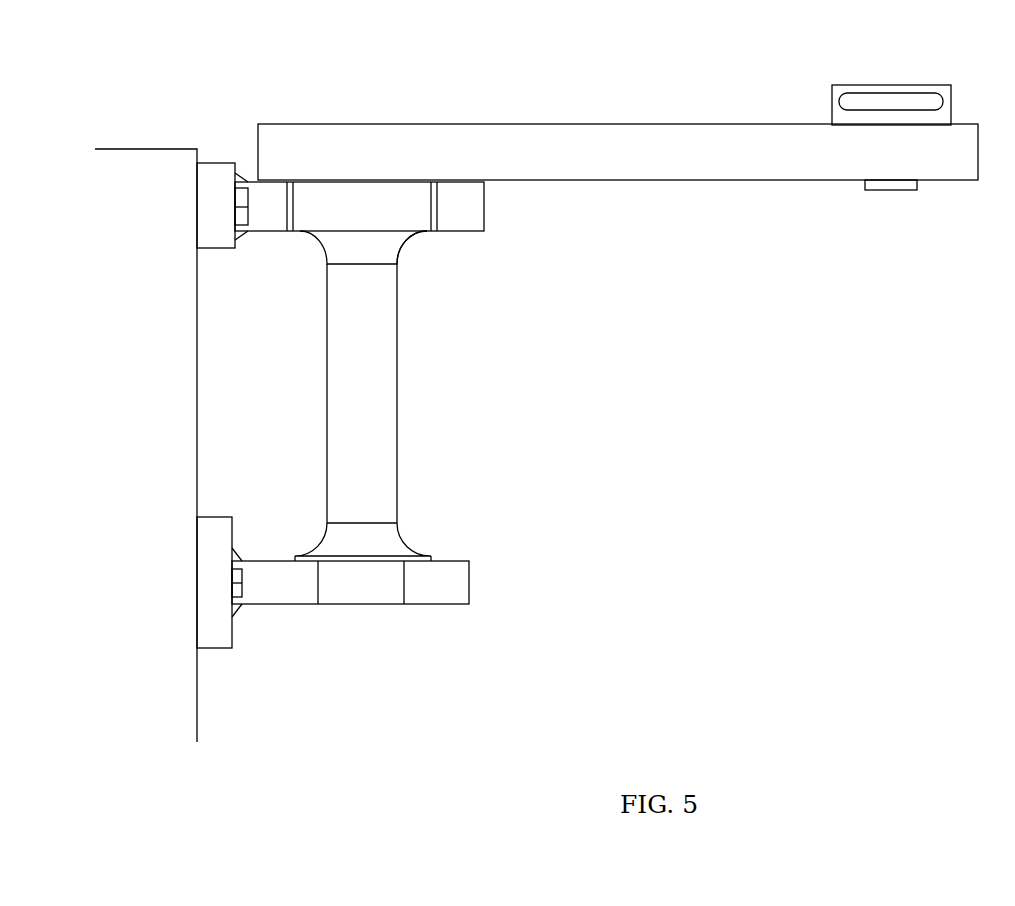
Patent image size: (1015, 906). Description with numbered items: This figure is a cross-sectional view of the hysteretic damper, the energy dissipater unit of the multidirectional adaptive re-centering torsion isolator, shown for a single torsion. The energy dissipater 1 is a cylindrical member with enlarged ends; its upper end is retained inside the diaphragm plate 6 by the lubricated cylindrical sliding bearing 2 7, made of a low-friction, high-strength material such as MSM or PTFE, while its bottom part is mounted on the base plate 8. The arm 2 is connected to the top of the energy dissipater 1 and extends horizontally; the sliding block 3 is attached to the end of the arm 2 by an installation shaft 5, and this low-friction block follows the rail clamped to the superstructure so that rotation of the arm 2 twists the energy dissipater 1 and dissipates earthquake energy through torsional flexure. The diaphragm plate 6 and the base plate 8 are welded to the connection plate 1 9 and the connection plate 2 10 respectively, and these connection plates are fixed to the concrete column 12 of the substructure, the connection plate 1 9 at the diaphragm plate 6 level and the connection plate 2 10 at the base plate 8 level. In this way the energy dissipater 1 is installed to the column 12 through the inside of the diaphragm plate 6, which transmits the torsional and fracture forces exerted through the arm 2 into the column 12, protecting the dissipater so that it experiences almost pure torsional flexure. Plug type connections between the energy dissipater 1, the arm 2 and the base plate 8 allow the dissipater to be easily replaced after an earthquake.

The energy dissipater 1 is at (410, 398).
The arm 2 is at (606, 114).
The sliding block 3 is at (891, 74).
The installation shaft 5 is at (891, 200).
The diaphragm plate 6 is at (494, 203).
The sliding bearing 2 7 is at (456, 261).
The base plate 8 is at (481, 583).
The connection plate 1 9 is at (239, 161).
The connection plate 2 10 is at (241, 656).
The column 12 is at (116, 140).